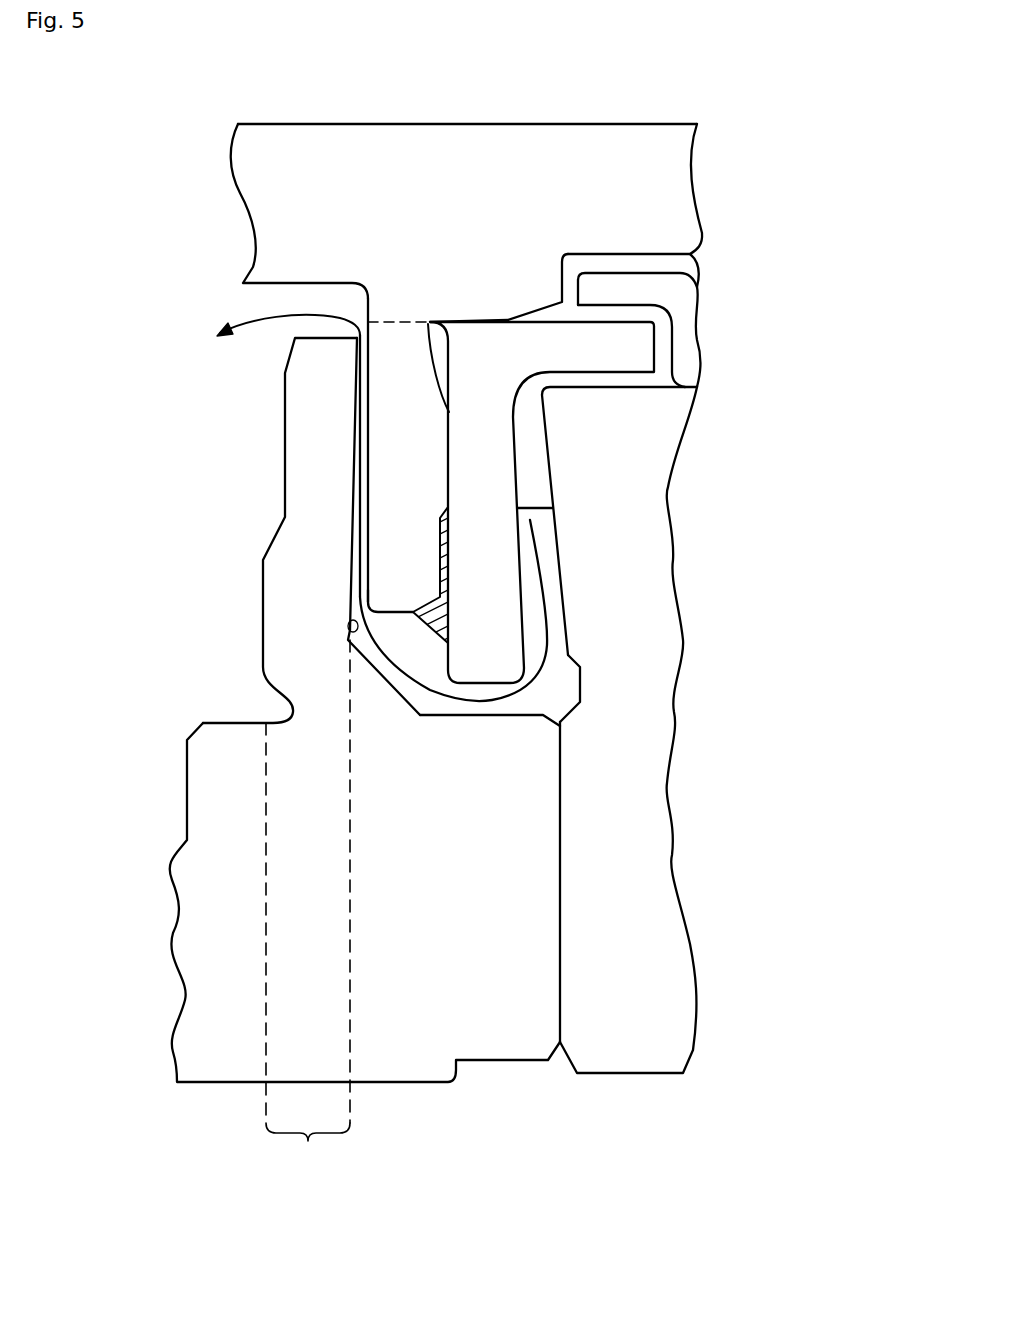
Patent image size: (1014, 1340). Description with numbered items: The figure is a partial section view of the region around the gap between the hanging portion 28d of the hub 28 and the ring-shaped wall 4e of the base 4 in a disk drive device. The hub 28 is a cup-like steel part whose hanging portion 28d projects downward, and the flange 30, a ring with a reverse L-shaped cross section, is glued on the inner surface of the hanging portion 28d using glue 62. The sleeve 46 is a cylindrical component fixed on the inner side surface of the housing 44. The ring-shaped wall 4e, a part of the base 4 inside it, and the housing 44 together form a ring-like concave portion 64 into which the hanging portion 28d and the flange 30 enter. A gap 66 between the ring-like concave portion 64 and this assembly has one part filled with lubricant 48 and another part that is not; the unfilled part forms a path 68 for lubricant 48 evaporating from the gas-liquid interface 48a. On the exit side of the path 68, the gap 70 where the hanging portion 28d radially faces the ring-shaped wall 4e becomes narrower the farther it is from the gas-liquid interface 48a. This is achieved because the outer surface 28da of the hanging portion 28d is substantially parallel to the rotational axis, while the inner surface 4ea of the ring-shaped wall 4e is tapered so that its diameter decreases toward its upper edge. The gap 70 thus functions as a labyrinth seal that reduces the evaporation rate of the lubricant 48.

The base 4 is at (513, 1043).
The ring-shaped wall 4e is at (308, 906).
The inner surface of the ring-shaped wall 4ea is at (348, 624).
The hub 28 is at (680, 225).
The hanging portion 28d is at (395, 348).
The outer surface of the hanging portion 28da is at (367, 548).
The flange 30 is at (638, 352).
The housing 44 is at (630, 1053).
The sleeve 46 is at (682, 295).
The lubricant 48 is at (576, 268).
The gas-liquid interface 48a is at (538, 510).
The glue 62 is at (448, 608).
The ring-like concave portion 64 is at (462, 716).
The gap 66 is at (507, 704).
The path 68 is at (408, 678).
The gap 70 is at (353, 597).